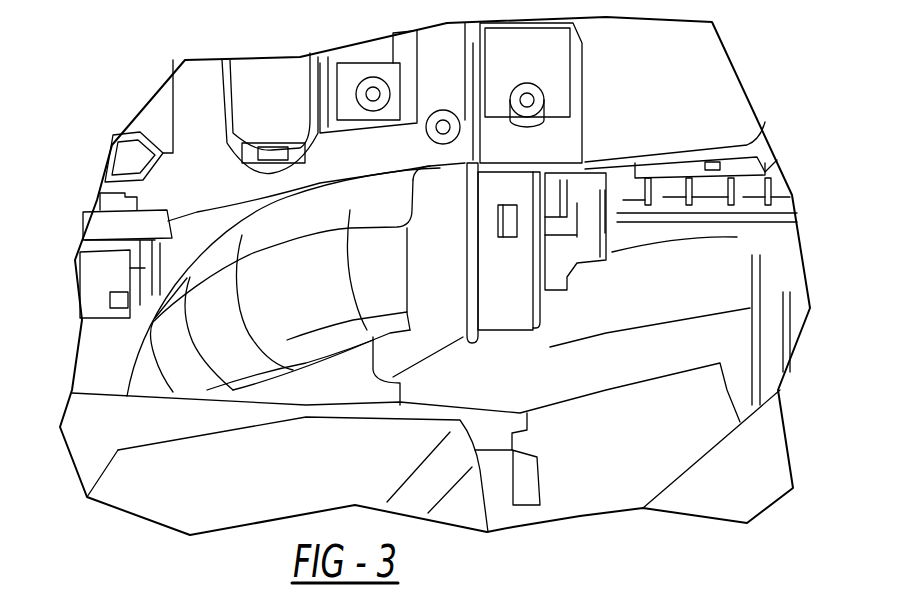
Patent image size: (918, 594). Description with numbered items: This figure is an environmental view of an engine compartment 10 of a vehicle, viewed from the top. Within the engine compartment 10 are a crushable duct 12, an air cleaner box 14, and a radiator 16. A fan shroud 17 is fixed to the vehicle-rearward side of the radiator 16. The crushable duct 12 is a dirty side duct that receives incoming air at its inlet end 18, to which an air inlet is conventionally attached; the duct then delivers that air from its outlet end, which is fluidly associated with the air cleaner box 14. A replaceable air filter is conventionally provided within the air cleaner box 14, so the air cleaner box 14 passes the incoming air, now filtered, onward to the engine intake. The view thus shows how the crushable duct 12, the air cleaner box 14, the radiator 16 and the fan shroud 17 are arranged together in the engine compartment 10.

The engine compartment 10 is at (137, 535).
The crushable duct 12 is at (212, 263).
The air cleaner box 14 is at (210, 522).
The radiator 16 is at (700, 132).
The fan shroud 17 is at (678, 300).
The inlet end 18 is at (515, 308).